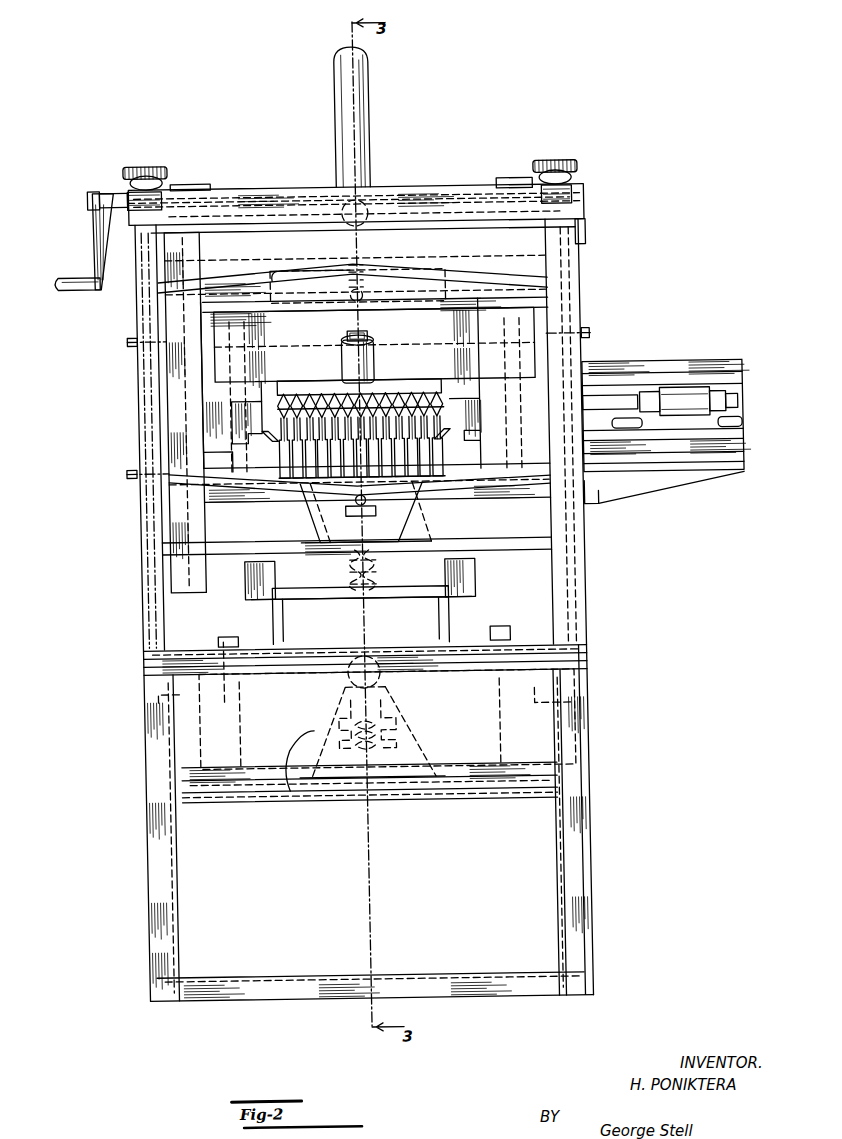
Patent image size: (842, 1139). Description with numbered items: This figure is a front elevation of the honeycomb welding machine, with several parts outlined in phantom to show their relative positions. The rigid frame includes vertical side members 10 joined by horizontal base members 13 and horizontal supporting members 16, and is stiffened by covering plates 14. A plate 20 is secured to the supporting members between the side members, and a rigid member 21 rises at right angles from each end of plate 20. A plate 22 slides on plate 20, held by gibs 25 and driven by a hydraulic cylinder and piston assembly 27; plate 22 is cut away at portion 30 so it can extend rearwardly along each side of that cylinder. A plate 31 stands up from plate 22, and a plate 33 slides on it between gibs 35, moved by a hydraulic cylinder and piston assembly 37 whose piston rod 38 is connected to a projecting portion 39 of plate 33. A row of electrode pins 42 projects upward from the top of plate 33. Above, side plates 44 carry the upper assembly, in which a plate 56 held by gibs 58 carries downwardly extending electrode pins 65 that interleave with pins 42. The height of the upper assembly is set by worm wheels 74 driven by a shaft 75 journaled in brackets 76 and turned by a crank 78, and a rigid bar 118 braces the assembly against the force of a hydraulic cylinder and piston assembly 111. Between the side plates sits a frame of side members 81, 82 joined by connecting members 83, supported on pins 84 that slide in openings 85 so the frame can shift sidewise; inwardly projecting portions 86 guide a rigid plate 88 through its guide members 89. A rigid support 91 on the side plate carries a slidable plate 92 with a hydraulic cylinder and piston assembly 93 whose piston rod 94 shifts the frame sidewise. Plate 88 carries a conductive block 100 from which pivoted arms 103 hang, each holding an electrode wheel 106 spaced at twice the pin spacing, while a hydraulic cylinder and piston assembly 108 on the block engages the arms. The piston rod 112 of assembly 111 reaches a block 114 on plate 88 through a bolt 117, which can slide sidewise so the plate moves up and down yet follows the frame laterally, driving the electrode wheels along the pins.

The vertical side member 10 is at (166, 896).
The horizontal base member 13 is at (377, 977).
The covering plate 14 is at (575, 917).
The horizontal supporting member 16 is at (464, 793).
The plate 20 is at (518, 780).
The rigid member 21 is at (534, 704).
The plate 22 is at (413, 737).
The gib 25 is at (485, 628).
The hydraulic cylinder and piston assembly 27 is at (330, 744).
The cut-away portion 30 is at (302, 785).
The plate 31 is at (228, 618).
The plate 33 is at (293, 599).
The gib 35 is at (244, 598).
The hydraulic cylinder and piston assembly 37 is at (371, 612).
The piston rod 38 is at (357, 520).
The projecting portion 39 is at (336, 512).
The electrode pin 42 is at (432, 455).
The side plate 44 is at (577, 320).
The plate 56 is at (285, 301).
The gib 58 is at (232, 419).
The electrode pin 65 is at (266, 442).
The worm wheel 74 is at (135, 165).
The shaft 75 is at (112, 189).
The bracket 76 is at (205, 184).
The crank 78 is at (71, 273).
The side member 81 is at (533, 378).
The side member 82 is at (162, 398).
The connecting member 83 is at (527, 300).
The pin 84 is at (121, 339).
The opening 85 is at (134, 328).
The inwardly projecting portion 86 is at (209, 476).
The rigid plate 88 is at (403, 319).
The guide member 89 is at (204, 435).
The rigid support 91 is at (591, 507).
The plate 92 is at (732, 416).
The hydraulic cylinder and piston assembly 93 is at (683, 395).
The piston rod 94 is at (619, 414).
The block 100 is at (416, 347).
The arm 103 is at (407, 379).
The electrode wheel 106 is at (423, 414).
The hydraulic cylinder and piston assembly 108 is at (335, 365).
The hydraulic cylinder and piston assembly 111 is at (366, 104).
The piston rod 112 is at (358, 228).
The block 114 is at (364, 292).
The bolt 117 is at (346, 281).
The rigid bar 118 is at (583, 235).